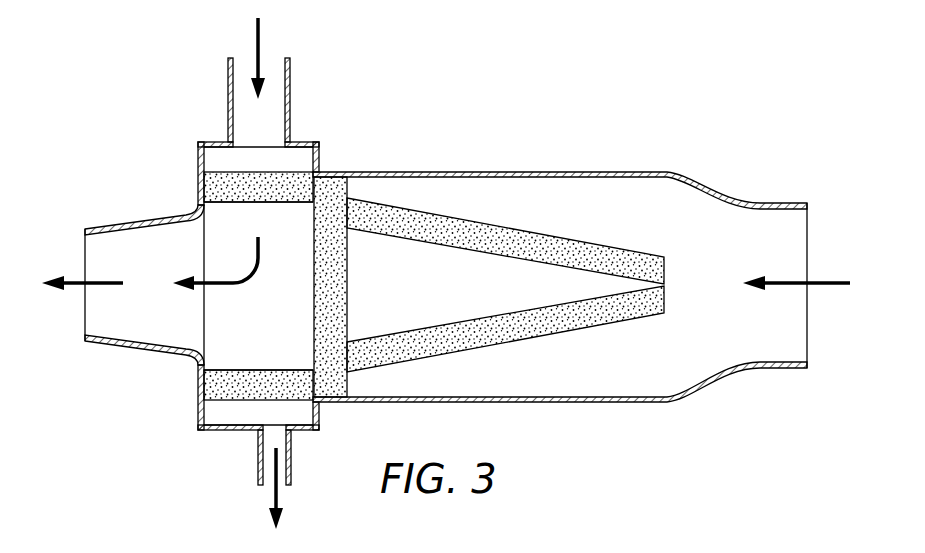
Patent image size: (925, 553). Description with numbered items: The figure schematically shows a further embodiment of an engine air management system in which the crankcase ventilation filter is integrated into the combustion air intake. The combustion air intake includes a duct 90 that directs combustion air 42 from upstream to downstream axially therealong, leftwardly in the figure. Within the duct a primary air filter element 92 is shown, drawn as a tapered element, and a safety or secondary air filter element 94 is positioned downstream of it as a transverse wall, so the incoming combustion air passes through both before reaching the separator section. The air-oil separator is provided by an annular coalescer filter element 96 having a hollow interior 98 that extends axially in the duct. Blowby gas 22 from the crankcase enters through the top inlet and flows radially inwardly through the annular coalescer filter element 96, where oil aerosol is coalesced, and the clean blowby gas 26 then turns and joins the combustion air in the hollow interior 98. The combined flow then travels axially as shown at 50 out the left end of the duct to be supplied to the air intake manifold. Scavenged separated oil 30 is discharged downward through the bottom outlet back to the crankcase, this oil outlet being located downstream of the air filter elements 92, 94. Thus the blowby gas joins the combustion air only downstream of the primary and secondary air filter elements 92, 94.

The blowby gas and oil aerosol flow 22 is at (262, 40).
The clean blowby gas flow 26 is at (220, 282).
The scavenged separated oil flow 30 is at (266, 492).
The incoming ambient combustion air flow 42 is at (822, 282).
The axial flow of combined air 50 is at (70, 288).
The duct 90 is at (451, 172).
The primary air filter element 92 is at (552, 236).
The safety or secondary air filter element 94 is at (348, 287).
The annular coalescer filter element 96 is at (285, 202).
The hollow interior 98 is at (271, 342).